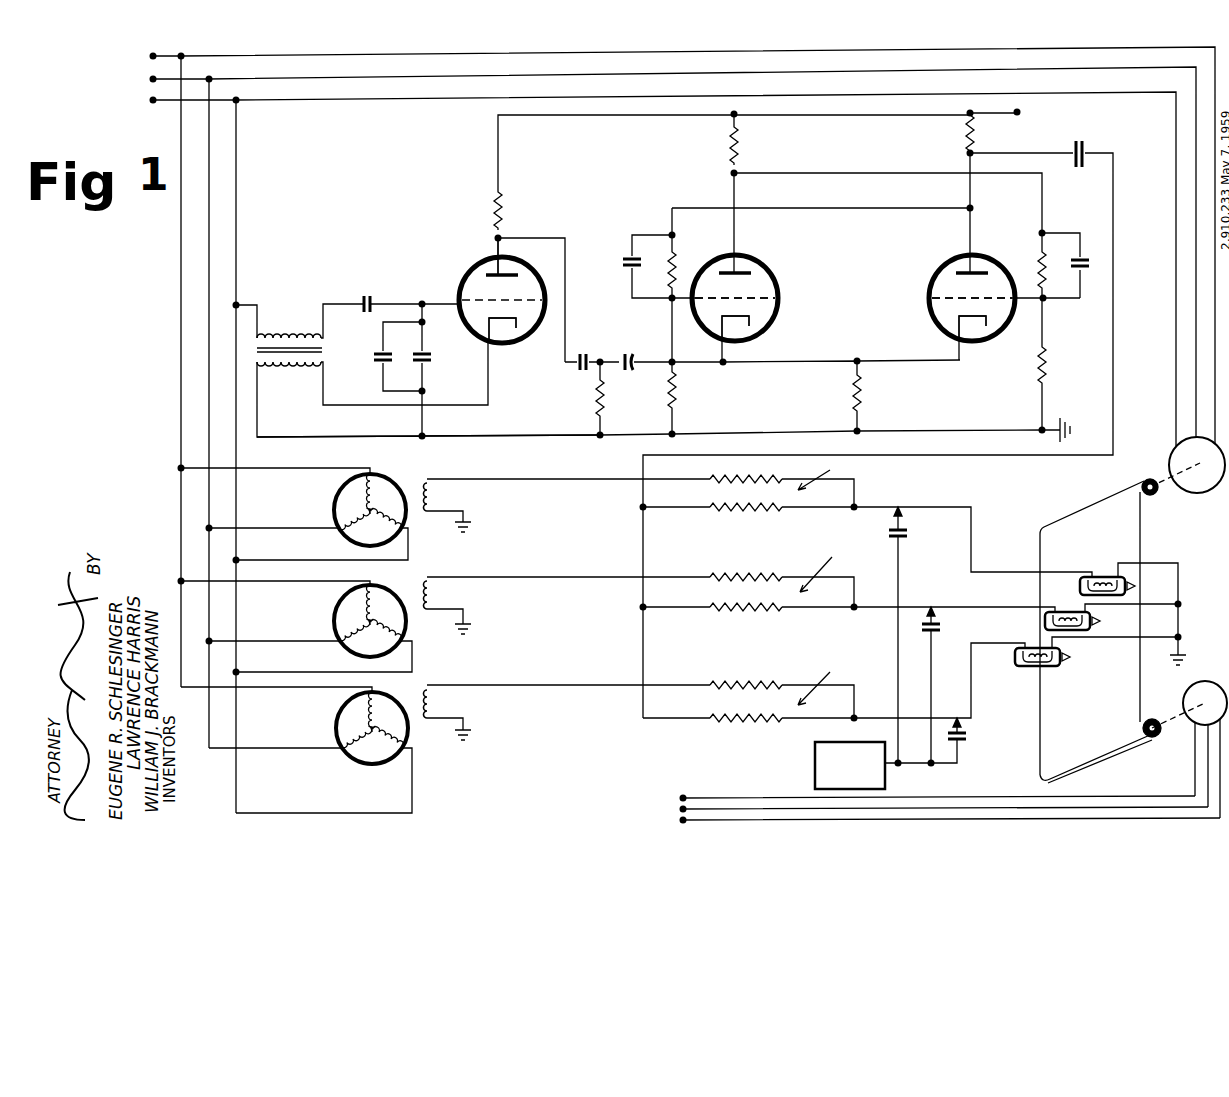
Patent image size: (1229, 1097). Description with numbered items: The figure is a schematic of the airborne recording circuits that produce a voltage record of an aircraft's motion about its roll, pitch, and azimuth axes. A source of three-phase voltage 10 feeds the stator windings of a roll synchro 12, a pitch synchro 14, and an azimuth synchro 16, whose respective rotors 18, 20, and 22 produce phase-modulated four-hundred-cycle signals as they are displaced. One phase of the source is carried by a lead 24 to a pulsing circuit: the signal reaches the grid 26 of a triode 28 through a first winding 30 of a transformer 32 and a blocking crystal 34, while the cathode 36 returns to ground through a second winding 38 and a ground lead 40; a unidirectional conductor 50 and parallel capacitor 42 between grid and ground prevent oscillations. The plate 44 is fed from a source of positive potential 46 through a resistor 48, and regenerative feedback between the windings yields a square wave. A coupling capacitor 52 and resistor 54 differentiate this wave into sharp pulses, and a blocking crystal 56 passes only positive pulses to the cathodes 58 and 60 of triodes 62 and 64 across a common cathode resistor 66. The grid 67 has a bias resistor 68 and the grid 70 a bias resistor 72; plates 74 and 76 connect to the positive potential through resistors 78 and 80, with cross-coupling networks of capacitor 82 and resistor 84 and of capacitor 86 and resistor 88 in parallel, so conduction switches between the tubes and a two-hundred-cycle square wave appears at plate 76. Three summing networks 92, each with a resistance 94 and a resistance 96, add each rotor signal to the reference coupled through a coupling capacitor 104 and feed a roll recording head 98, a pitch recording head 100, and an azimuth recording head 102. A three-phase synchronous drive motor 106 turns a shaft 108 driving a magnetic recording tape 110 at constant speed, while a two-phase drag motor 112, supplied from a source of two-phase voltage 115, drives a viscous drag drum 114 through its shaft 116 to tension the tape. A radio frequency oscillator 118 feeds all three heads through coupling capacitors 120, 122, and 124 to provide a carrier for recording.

The source of three-phase voltage 10 is at (139, 99).
The roll synchro 12 is at (390, 484).
The pitch synchro 14 is at (392, 594).
The azimuth synchro 16 is at (400, 704).
The rotor 18 is at (438, 486).
The rotor 20 is at (436, 590).
The rotor 22 is at (436, 692).
The lead 24 is at (237, 238).
The grid 26 is at (465, 288).
The triode 28 is at (540, 278).
The first winding 30 is at (292, 330).
The transformer 32 is at (332, 344).
The blocking crystal 34 is at (370, 296).
The cathode 36 is at (496, 342).
The second winding 38 is at (290, 372).
The ground lead 40 is at (520, 436).
The capacitor 42 is at (378, 362).
The plate 44 is at (492, 262).
The source of positive potential 46 is at (1022, 112).
The resistor 48 is at (505, 208).
The unidirectional conductor 50 is at (432, 358).
The coupling capacitor 52 is at (586, 352).
The resistor 54 is at (606, 400).
The blocking crystal 56 is at (630, 352).
The cathode 58 is at (756, 332).
The cathode 60 is at (972, 336).
The triode 62 is at (778, 272).
The triode 64 is at (930, 290).
The common cathode resistor 66 is at (866, 392).
The grid 67 is at (782, 298).
The bias resistor 68 is at (678, 402).
The grid 70 is at (928, 298).
The bias resistor 72 is at (1050, 370).
The plate 74 is at (748, 270).
The plate 76 is at (986, 270).
The resistor 78 is at (742, 150).
The resistor 80 is at (976, 136).
The capacitor 82 is at (622, 262).
The resistor 84 is at (678, 264).
The capacitor 86 is at (1084, 258).
The resistor 88 is at (1047, 252).
The summing network 92 is at (827, 580).
The resistance 94 is at (774, 477).
The resistance 96 is at (740, 514).
The roll recording head 98 is at (1104, 575).
The pitch recording head 100 is at (1075, 632).
The azimuth recording head 102 is at (1020, 668).
The coupling capacitor 104 is at (1081, 140).
The three-phase synchronous drive motor 106 is at (1210, 494).
The shaft 108 is at (1160, 494).
The magnetic recording tape 110 is at (1104, 494).
The two-phase drag motor 112 is at (1196, 683).
The viscous drag drum 114 is at (1150, 744).
The source of two-phase voltage 115 is at (674, 802).
The shaft 116 is at (1164, 728).
The radio frequency oscillator 118 is at (862, 790).
The coupling capacitor 120 is at (910, 538).
The coupling capacitor 122 is at (942, 630).
The coupling capacitor 124 is at (970, 740).